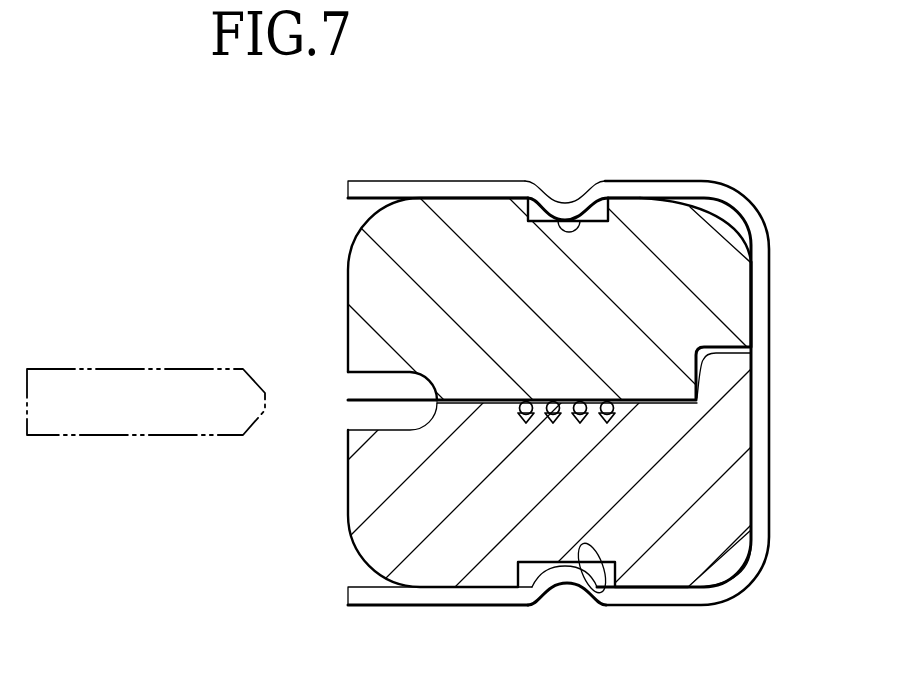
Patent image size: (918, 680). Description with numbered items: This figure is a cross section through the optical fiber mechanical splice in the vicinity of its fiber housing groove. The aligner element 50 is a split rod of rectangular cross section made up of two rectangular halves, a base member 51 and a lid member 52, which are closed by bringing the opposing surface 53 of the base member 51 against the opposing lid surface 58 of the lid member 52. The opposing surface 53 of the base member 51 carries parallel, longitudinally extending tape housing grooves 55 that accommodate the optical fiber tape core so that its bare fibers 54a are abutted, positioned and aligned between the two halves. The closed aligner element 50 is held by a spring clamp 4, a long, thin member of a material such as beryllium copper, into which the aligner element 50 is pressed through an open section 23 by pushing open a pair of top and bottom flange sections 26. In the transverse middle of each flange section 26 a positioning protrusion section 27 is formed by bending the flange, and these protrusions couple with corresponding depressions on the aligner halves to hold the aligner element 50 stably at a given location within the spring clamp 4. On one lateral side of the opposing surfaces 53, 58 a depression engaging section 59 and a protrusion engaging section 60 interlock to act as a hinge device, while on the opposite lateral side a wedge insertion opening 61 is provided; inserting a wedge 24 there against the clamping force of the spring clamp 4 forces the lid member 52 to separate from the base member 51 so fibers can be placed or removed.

The spring clamp 4 is at (770, 302).
The open section 23 is at (355, 212).
The wedge 24 is at (127, 369).
The flange sections 26 is at (350, 181).
The positioning protrusion section 27 is at (557, 203).
The aligner element 50 is at (724, 208).
The base member 51 is at (753, 503).
The lid member 52 is at (754, 277).
The opposing surface 53 is at (672, 403).
The bare fibers 54a is at (570, 422).
The tape housing grooves 55 is at (523, 418).
The opposing lid surface 58 is at (488, 403).
The depression engaging section 59 is at (585, 201).
The protrusion engaging section 60 is at (733, 376).
The wedge insertion opening 61 is at (355, 382).